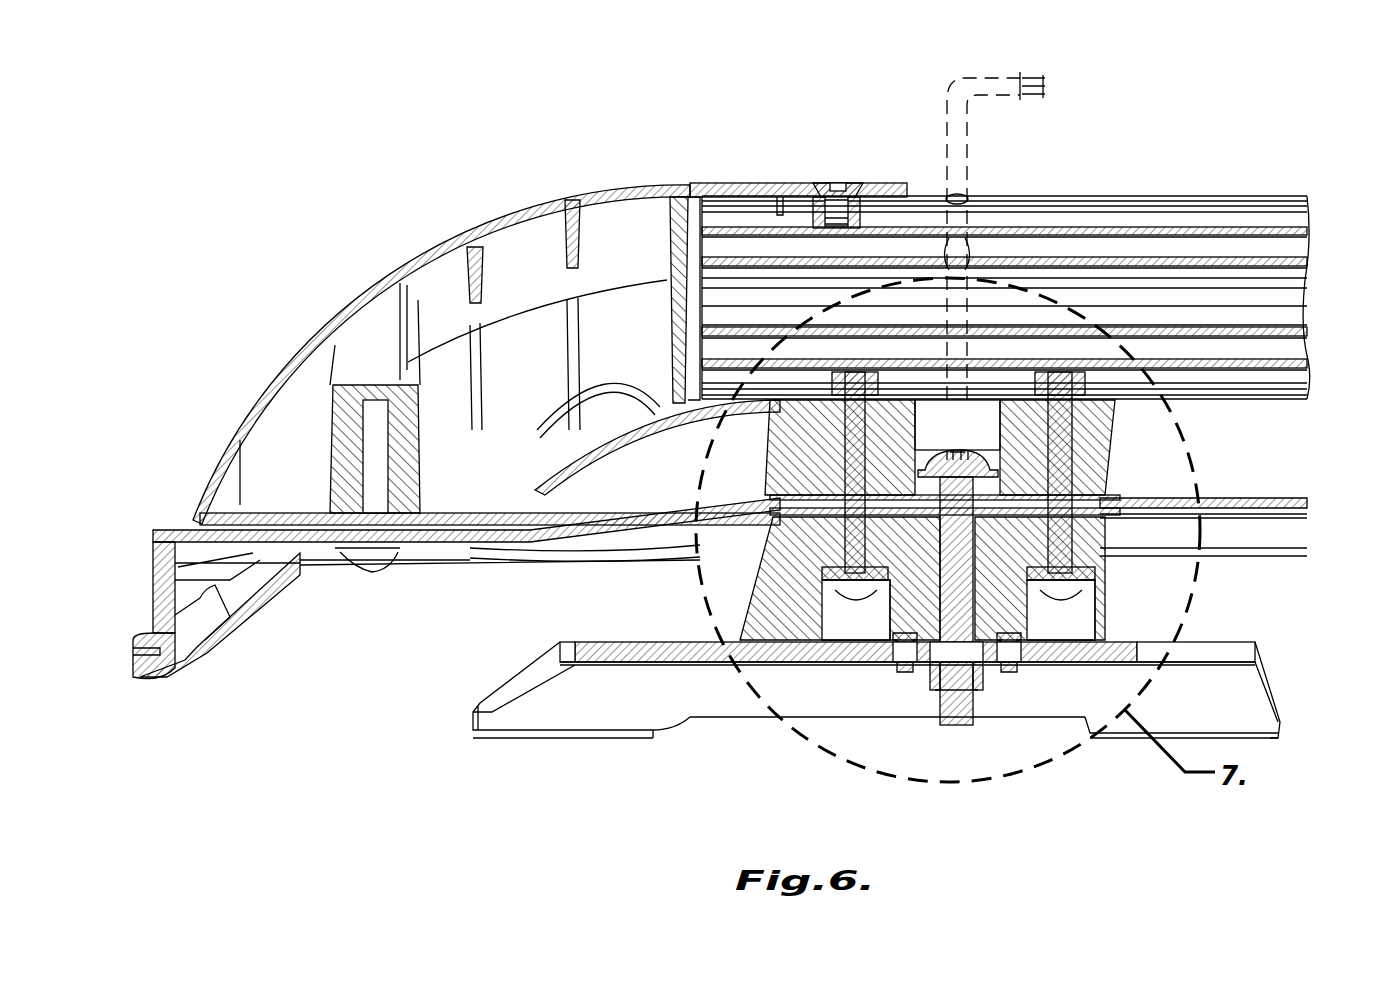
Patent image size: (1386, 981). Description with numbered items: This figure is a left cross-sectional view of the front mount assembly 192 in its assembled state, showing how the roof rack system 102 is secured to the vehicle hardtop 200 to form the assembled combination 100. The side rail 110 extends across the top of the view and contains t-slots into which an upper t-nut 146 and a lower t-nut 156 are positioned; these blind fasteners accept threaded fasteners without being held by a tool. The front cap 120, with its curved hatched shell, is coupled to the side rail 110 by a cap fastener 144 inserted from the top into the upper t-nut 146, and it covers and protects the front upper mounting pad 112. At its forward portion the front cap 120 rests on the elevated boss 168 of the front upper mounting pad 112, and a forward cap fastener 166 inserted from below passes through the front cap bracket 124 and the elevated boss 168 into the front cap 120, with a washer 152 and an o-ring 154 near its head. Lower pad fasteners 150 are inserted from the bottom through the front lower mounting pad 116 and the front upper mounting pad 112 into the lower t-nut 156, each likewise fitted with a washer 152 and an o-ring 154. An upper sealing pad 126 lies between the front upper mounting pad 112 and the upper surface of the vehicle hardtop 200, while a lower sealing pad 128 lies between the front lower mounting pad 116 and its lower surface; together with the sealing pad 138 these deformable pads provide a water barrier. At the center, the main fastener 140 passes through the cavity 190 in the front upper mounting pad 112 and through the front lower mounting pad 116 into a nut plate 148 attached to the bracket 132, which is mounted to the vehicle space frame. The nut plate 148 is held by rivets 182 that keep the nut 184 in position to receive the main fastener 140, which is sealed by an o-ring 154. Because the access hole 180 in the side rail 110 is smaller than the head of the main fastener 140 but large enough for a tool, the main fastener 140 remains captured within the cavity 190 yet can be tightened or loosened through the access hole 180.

The assembled combination 100 is at (466, 190).
The roof rack system 102 is at (590, 196).
The side rail 110 is at (1185, 250).
The front upper mounting pad 112 is at (1060, 405).
The front lower mounting pad 116 is at (1100, 520).
The front cap 120 is at (432, 256).
The front cap bracket 124 is at (215, 630).
The upper sealing pad 126 is at (740, 482).
The lower sealing pad 128 is at (668, 556).
The bracket 132 is at (1262, 690).
The sealing pad 138 is at (237, 510).
The main fastener 140 is at (1040, 432).
The cap fastener 144 is at (823, 195).
The upper t-nut 146 is at (858, 222).
The nut plate 148 is at (935, 686).
The lower pad fastener 150 is at (845, 582).
The washer 152 is at (765, 430).
The o-ring 154 is at (770, 400).
The lower t-nut 156 is at (790, 418).
The forward cap fastener 166 is at (380, 572).
The elevated boss 168 is at (340, 405).
The access hole 180 is at (962, 245).
The rivet 182 is at (900, 675).
The nut 184 is at (965, 700).
The cavity 190 is at (990, 410).
The front mount assembly 192 is at (932, 195).
The vehicle hardtop 200 is at (160, 530).